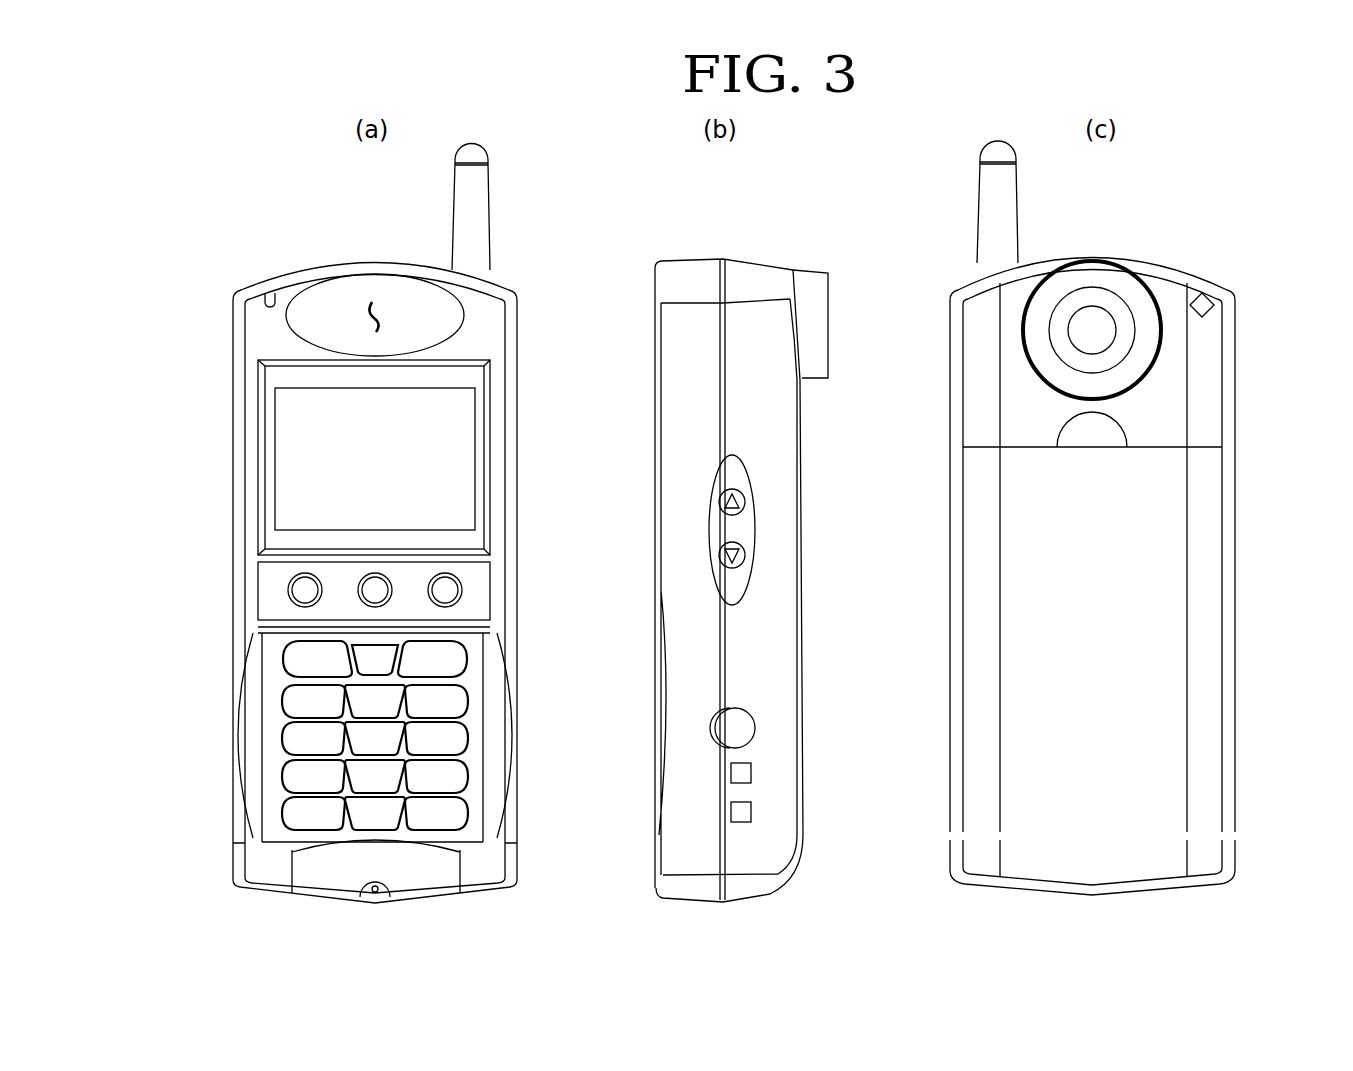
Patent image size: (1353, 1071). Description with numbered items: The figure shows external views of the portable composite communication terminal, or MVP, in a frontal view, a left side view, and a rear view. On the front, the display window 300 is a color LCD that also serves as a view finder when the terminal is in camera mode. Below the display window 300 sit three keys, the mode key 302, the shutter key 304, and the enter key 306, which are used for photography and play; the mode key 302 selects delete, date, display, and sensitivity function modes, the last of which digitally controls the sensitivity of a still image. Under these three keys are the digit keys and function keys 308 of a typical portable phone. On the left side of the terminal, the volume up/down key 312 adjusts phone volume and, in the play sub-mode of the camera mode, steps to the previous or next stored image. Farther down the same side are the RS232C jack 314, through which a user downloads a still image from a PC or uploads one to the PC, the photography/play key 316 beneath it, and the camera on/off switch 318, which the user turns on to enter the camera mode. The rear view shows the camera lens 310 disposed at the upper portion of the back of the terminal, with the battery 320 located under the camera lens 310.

The display window 300 is at (468, 460).
The mode key 302 is at (297, 592).
The shutter key 304 is at (392, 588).
The enter key 306 is at (458, 593).
The digit keys and function keys 308 is at (521, 636).
The camera lens 310 is at (840, 322).
The volume up/down key 312 is at (750, 527).
The RS232C jack 314 is at (757, 729).
The photography/play key 316 is at (752, 773).
The camera on/off switch 318 is at (752, 812).
The battery 320 is at (1165, 716).